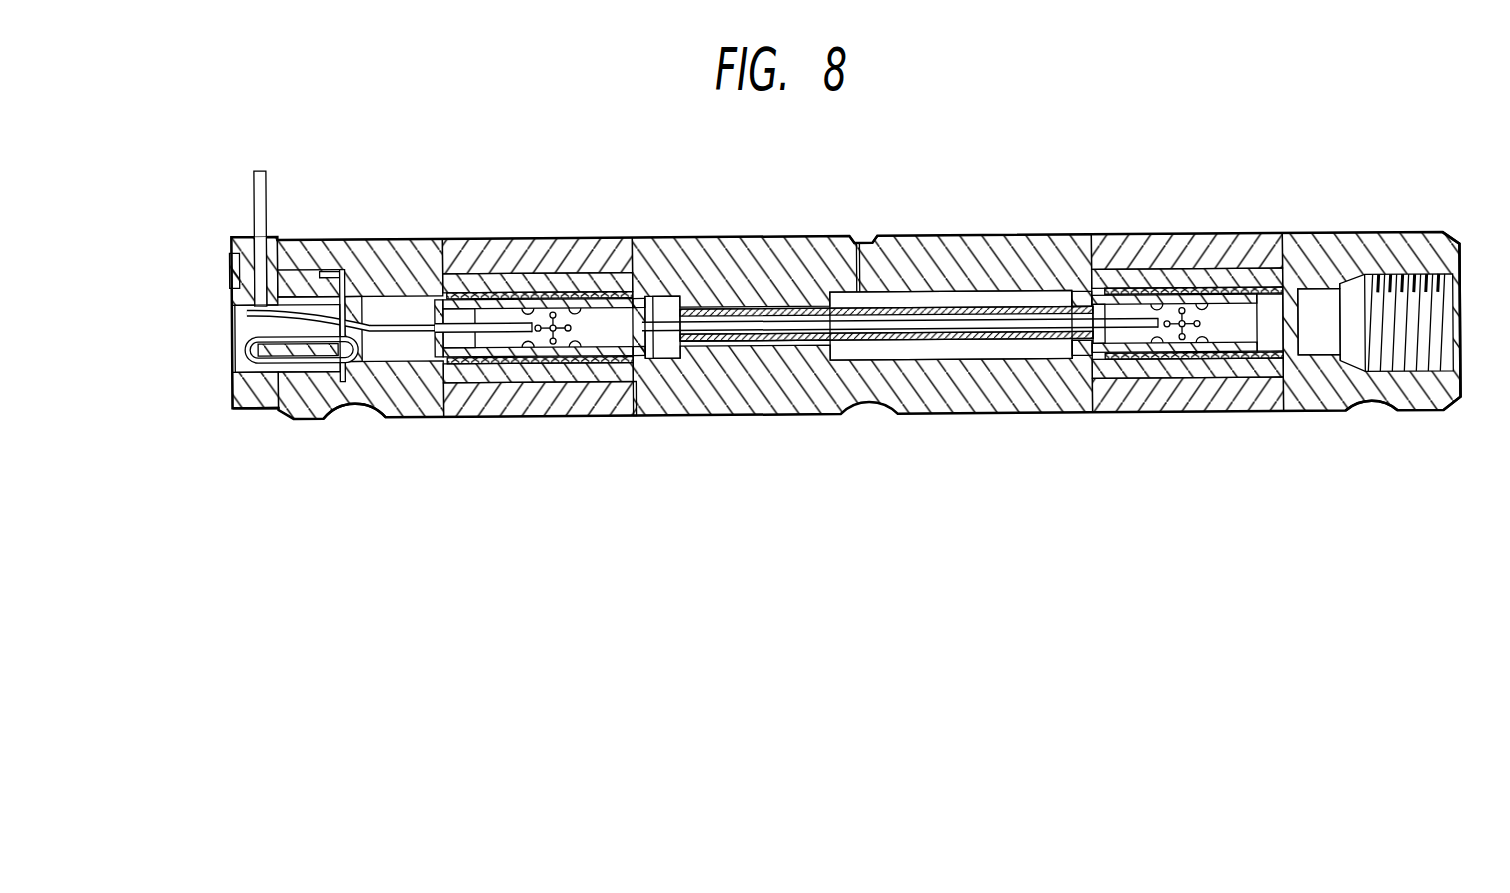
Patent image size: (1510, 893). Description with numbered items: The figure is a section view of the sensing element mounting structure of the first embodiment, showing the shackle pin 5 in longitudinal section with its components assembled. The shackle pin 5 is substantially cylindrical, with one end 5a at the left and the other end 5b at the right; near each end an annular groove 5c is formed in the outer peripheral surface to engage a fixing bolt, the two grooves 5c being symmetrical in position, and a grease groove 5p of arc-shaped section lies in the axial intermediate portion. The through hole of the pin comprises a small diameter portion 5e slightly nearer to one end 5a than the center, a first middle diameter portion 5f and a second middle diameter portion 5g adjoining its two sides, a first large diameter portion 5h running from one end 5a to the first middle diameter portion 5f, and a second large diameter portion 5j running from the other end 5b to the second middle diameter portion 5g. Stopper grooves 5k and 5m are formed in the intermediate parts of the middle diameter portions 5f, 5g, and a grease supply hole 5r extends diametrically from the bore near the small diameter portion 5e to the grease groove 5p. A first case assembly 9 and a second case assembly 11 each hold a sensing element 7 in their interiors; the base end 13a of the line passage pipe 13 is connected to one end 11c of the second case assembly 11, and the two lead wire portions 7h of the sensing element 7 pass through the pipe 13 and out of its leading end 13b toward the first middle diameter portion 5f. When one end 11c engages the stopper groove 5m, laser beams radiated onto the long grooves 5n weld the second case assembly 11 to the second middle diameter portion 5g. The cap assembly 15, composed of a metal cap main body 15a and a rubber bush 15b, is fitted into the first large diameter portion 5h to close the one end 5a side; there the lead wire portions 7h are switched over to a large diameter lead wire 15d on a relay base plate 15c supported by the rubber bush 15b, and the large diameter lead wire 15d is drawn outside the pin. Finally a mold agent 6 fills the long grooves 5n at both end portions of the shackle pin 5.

The shackle pin 5 is at (770, 241).
The one end 5a is at (264, 409).
The other end 5b is at (1462, 385).
The annular groove 5c is at (358, 409).
The small diameter portion 5e is at (790, 342).
The first middle diameter portion 5f is at (706, 370).
The second middle diameter portion 5g is at (967, 364).
The first large diameter portion 5h is at (325, 372).
The second large diameter portion 5j is at (1413, 379).
The stopper groove 5k is at (667, 370).
The stopper groove 5m is at (1068, 358).
The long groove 5n is at (631, 292).
The grease groove 5p is at (877, 242).
The grease supply hole 5r is at (858, 248).
The mold agent 6 is at (512, 262).
The sensing element 7 is at (541, 358).
The lead wire portion 7h is at (492, 330).
The first case assembly 9 is at (552, 284).
The second case assembly 11 is at (1182, 284).
The one end of the second case assembly 11c is at (1080, 306).
The line passage pipe 13 is at (933, 312).
The base end 13a is at (1027, 348).
The leading end 13b is at (662, 302).
The cap assembly 15 is at (214, 321).
The cap main body 15a is at (232, 390).
The rubber bush 15b is at (297, 268).
The relay base plate 15c is at (320, 337).
The large diameter lead wire 15d is at (256, 172).